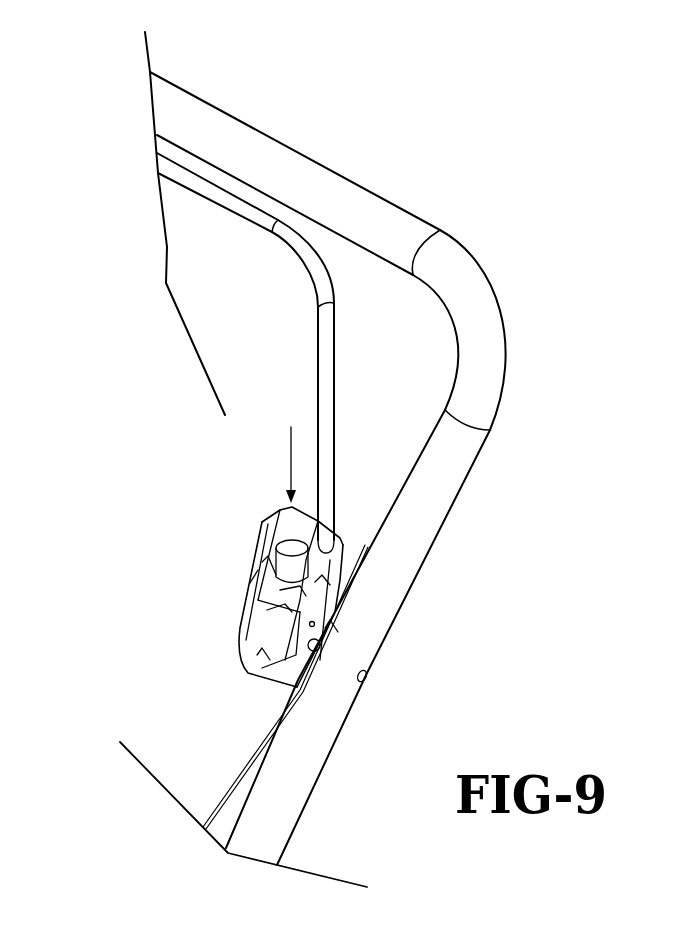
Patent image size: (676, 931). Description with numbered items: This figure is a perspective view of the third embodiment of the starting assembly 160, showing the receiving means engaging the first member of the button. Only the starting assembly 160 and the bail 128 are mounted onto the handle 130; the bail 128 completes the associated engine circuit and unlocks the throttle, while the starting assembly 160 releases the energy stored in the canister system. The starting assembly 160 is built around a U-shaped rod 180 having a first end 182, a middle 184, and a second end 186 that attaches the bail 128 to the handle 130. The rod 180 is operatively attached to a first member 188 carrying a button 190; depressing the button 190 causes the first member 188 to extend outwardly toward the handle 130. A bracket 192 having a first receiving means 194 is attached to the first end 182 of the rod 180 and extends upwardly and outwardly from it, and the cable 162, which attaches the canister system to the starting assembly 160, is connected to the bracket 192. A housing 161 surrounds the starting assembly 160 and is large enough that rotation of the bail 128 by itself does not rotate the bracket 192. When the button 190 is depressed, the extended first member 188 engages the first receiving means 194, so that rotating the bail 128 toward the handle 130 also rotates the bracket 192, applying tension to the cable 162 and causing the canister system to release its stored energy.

The bail 128 is at (245, 207).
The handle 130 is at (418, 226).
The starting assembly 160 is at (245, 495).
The housing 161 is at (250, 583).
The cable 162 is at (252, 735).
The U-shaped rod 180 is at (280, 590).
The first end 182 is at (257, 655).
The middle 184 is at (262, 562).
The second end 186 is at (288, 517).
The first member 188 is at (315, 582).
The button 190 is at (280, 547).
The bracket 192 is at (325, 628).
The first receiving means 194 is at (267, 610).